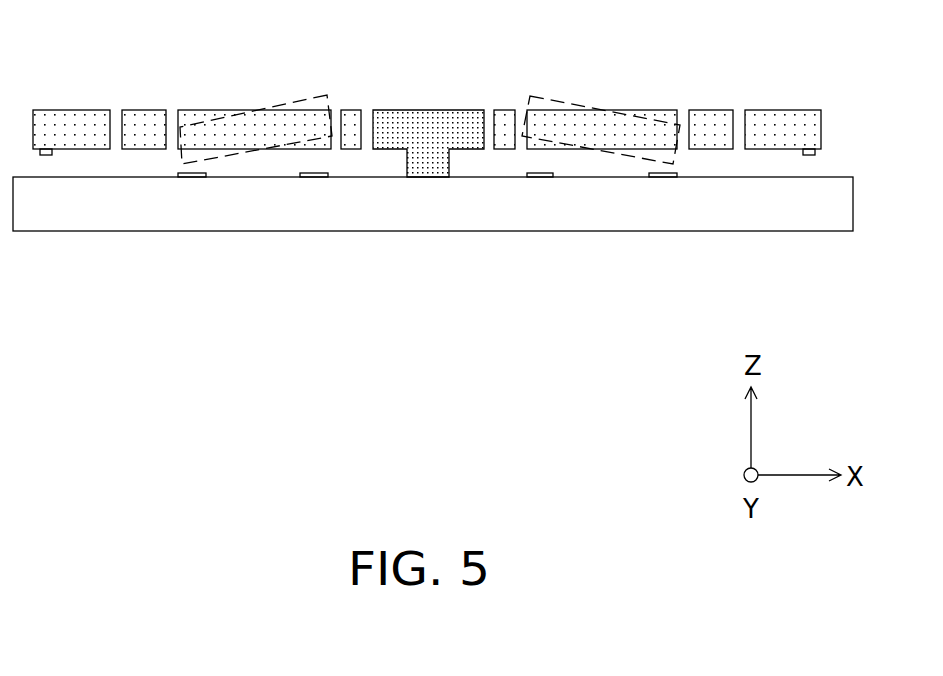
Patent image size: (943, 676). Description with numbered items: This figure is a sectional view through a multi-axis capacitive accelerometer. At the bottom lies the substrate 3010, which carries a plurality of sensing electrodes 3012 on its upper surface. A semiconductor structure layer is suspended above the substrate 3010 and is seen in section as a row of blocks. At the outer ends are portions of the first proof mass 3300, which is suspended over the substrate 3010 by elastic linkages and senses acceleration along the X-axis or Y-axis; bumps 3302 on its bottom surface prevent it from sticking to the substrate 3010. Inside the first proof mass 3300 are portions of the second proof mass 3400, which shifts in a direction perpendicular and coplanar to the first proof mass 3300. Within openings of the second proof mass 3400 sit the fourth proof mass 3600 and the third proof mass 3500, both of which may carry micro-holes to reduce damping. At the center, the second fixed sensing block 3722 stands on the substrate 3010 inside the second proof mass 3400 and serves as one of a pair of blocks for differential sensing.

The substrate 3010 is at (426, 215).
The sensing electrodes 3012 is at (192, 177).
The bumps 3302 is at (43, 155).
The first proof mass 3300 is at (791, 127).
The second proof mass 3400 is at (503, 127).
The fourth proof mass 3600 is at (260, 127).
The third proof mass 3500 is at (600, 127).
The second fixed sensing block 3722 is at (428, 127).